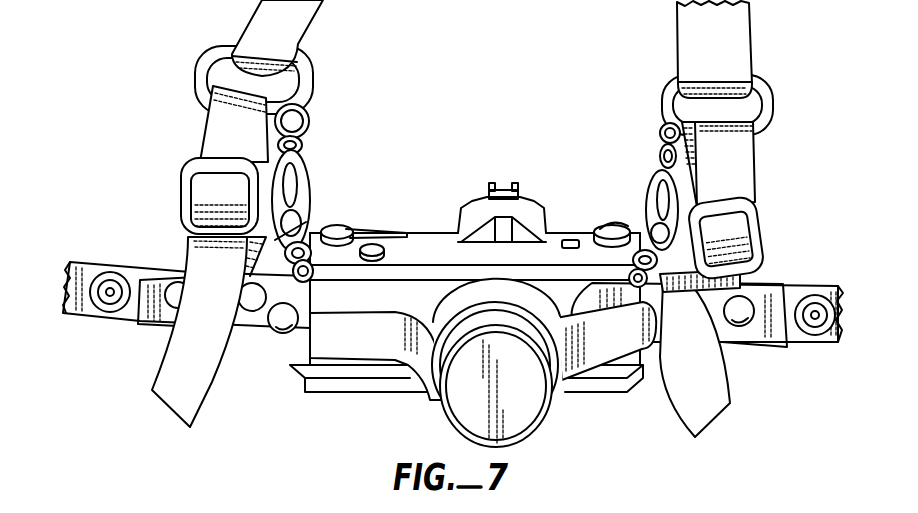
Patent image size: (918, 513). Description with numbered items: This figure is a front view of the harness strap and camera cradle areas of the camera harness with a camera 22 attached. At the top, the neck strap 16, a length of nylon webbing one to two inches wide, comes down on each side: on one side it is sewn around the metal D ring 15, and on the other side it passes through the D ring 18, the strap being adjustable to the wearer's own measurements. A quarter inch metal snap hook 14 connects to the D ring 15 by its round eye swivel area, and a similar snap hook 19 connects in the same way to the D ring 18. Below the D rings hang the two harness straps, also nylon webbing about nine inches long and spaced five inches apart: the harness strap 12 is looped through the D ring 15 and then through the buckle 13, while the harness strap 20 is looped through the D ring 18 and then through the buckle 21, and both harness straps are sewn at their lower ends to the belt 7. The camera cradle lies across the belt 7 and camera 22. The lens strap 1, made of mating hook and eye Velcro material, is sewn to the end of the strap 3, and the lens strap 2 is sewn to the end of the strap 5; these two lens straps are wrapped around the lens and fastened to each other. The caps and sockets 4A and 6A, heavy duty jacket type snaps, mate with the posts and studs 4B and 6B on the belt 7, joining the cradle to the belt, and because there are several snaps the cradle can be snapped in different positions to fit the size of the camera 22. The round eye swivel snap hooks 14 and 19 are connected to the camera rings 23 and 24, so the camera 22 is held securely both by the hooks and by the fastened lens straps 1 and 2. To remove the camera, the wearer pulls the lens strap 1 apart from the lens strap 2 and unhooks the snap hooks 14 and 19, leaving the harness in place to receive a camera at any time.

The lens strap 1 is at (459, 302).
The lens strap 2 is at (553, 313).
The strap 3 is at (383, 343).
The cap and socket 4A is at (268, 333).
The post and stud 4B is at (108, 318).
The strap 5 is at (600, 347).
The cap and socket 6A is at (735, 330).
The post and stud 6B is at (806, 338).
The belt 7 is at (90, 264).
The harness strap 12 is at (748, 166).
The buckle 13 is at (764, 210).
The snap hook 14 is at (657, 180).
The D ring 15 is at (773, 100).
The neck strap 16 is at (320, 25).
The D ring 18 is at (220, 50).
The snap hook 19 is at (305, 178).
The harness strap 20 is at (216, 136).
The buckle 21 is at (186, 190).
The camera 22 is at (418, 236).
The camera ring 23 is at (640, 250).
The camera ring 24 is at (282, 240).